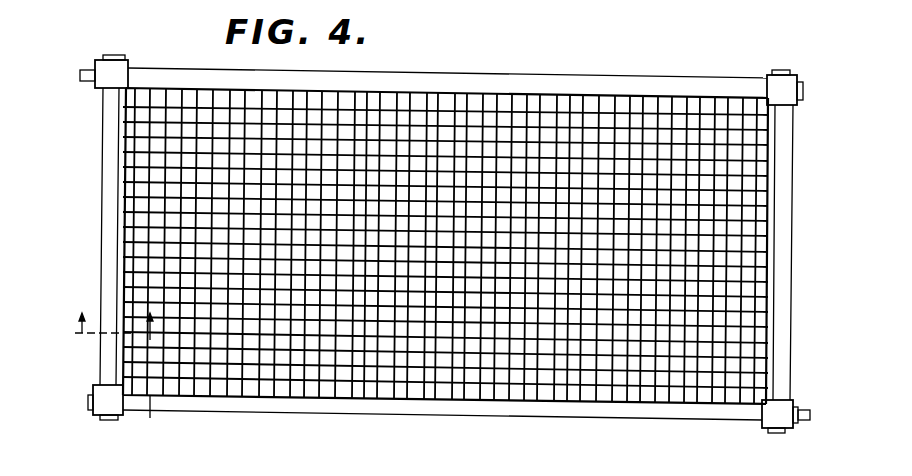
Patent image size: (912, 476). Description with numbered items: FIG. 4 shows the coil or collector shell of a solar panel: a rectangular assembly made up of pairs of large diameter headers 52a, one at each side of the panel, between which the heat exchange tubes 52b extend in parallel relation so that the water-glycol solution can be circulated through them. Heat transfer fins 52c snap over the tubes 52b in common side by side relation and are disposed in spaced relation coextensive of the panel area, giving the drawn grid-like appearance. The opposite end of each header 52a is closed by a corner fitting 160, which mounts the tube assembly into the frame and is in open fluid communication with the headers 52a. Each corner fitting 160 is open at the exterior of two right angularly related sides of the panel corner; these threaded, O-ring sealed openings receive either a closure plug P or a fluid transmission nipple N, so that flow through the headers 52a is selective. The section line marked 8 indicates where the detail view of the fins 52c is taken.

The header 52a is at (497, 80).
The heat exchange tube 52b is at (348, 100).
The heat transfer fin 52c is at (150, 123).
The corner fitting 160 is at (787, 88).
The closure plug P is at (782, 72).
The fluid transmission nipple N is at (82, 70).
The section line 8- 8 is at (111, 384).